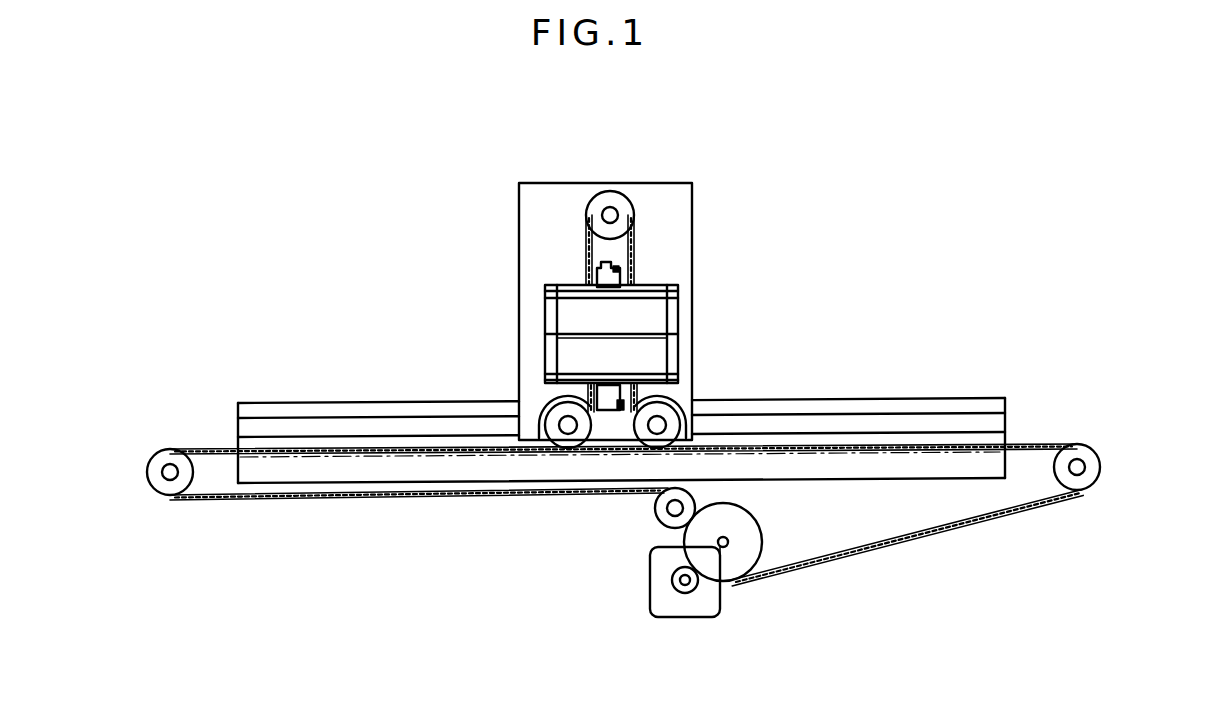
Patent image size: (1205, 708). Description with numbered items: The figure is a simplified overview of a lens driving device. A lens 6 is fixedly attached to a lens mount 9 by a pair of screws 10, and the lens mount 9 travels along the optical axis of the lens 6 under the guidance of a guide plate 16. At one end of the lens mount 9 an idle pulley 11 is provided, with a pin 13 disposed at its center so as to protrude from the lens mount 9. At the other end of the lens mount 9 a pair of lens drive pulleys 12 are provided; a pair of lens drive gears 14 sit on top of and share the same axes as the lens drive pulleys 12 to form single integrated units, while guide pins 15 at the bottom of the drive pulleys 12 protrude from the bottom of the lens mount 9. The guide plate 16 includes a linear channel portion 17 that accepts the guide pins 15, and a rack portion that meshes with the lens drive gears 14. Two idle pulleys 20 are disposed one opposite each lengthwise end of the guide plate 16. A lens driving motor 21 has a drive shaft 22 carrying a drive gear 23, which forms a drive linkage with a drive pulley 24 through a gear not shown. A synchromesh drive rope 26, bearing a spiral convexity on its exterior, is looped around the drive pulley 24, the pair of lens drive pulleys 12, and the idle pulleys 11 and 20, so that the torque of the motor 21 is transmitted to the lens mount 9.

The lens 6 is at (677, 300).
The lens mount 9 is at (690, 197).
The screws 10 is at (627, 272).
The idle pulley 11 is at (627, 197).
The lens drive pulleys 12 is at (566, 426).
The pin 13 is at (609, 214).
The lens drive gears 14 is at (543, 417).
The guide pins 15 is at (545, 430).
The guide plate 16 is at (970, 398).
The linear channel portion 17 is at (995, 422).
The idle pulleys 20 is at (146, 471).
The lens driving motor 21 is at (720, 597).
The drive shaft 22 is at (685, 582).
The drive gear 23 is at (665, 570).
The drive pulley 24 is at (755, 520).
The synchromesh drive rope 26 is at (872, 545).